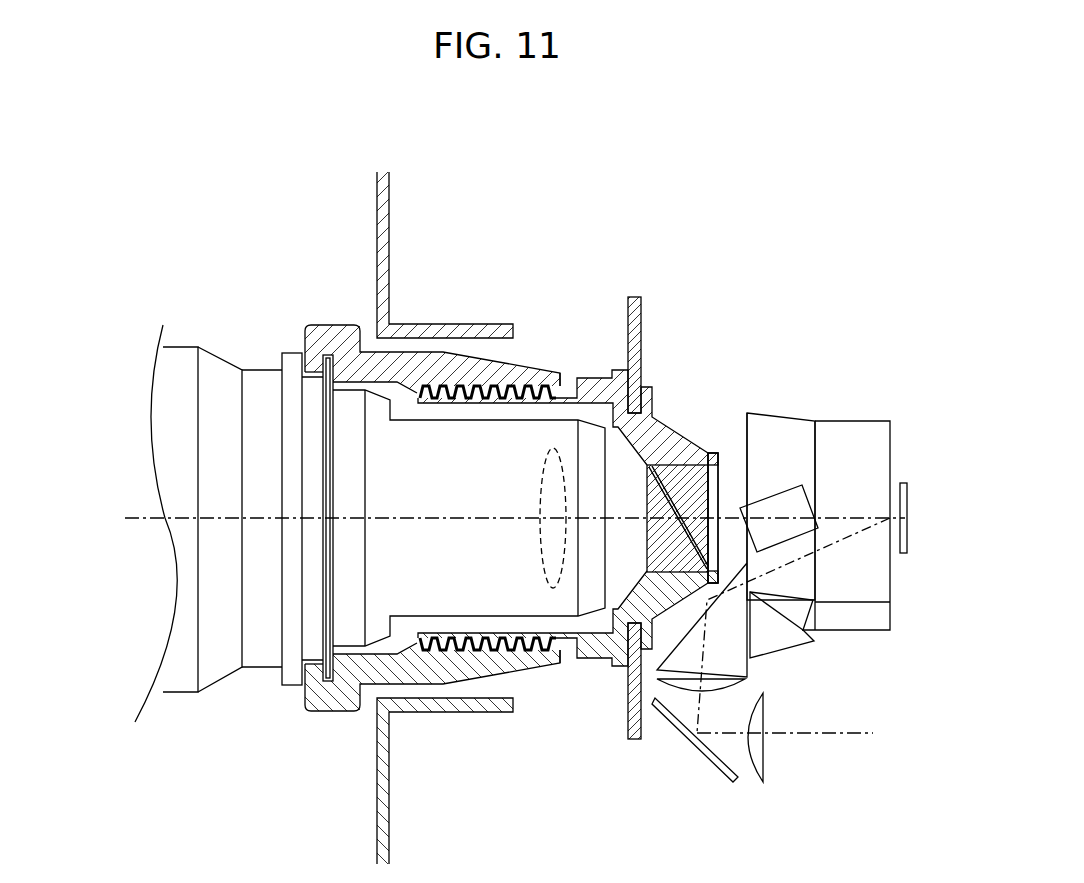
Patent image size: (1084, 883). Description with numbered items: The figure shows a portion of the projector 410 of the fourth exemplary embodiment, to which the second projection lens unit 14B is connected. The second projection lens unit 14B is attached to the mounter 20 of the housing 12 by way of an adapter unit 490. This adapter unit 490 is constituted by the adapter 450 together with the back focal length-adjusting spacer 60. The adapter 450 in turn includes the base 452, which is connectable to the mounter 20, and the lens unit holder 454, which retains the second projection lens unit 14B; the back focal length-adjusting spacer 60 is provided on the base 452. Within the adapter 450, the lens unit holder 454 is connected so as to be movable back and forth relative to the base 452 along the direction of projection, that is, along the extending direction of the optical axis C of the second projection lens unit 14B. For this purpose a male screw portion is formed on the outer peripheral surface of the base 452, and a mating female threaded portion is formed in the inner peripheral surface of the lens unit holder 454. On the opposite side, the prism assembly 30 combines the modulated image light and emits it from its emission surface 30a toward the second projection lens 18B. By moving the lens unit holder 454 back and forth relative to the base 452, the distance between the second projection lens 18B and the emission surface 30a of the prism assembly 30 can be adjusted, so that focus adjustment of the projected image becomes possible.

The projector 410 is at (148, 297).
The housing 12 is at (378, 198).
The mounter 20 is at (630, 321).
The lens unit holder 454 is at (538, 668).
The base 452 is at (590, 668).
The adapter 450 is at (493, 780).
The adapter unit 490 is at (566, 362).
The second projection lens unit 14B is at (449, 464).
The second projection lens 18B is at (550, 497).
The back focal length-adjusting spacer 60 is at (648, 528).
The emission surface 30a is at (747, 413).
The prism assembly 30 is at (848, 652).
The optical axis C is at (497, 519).